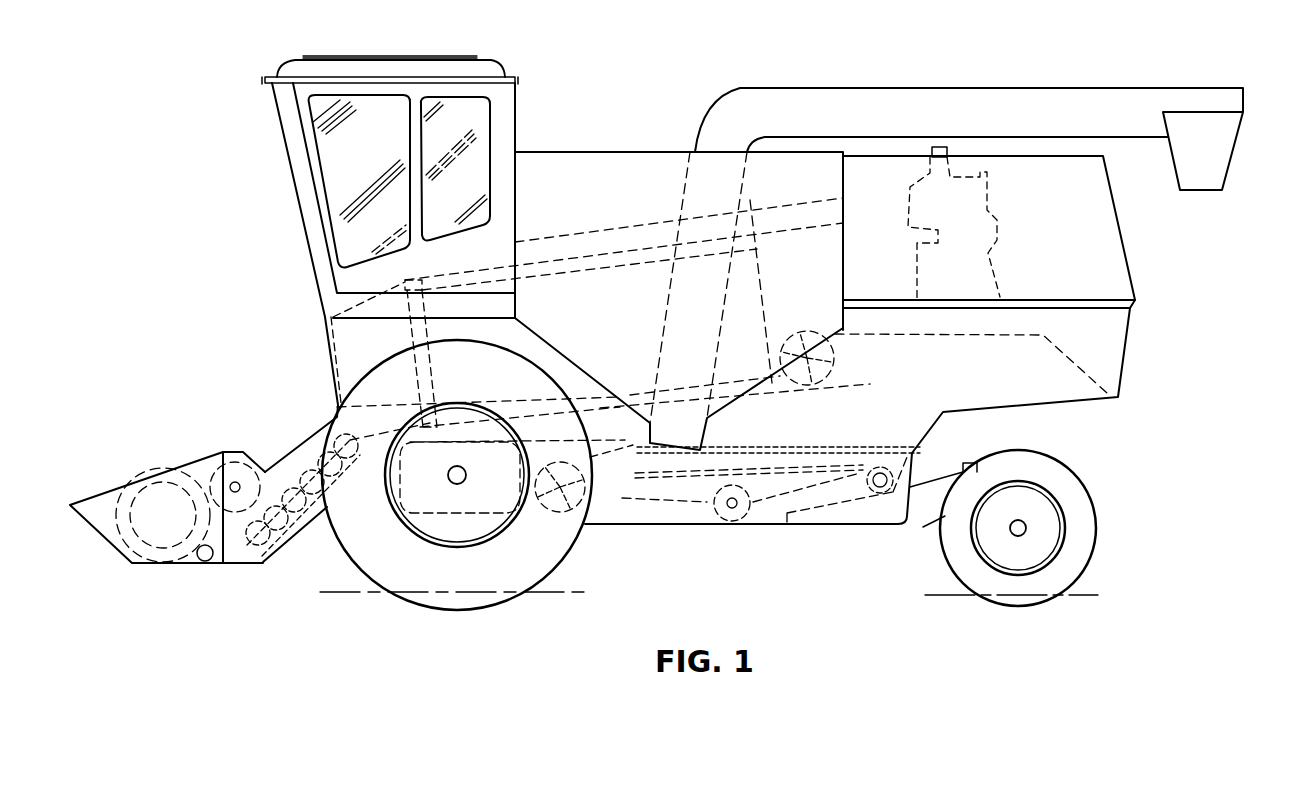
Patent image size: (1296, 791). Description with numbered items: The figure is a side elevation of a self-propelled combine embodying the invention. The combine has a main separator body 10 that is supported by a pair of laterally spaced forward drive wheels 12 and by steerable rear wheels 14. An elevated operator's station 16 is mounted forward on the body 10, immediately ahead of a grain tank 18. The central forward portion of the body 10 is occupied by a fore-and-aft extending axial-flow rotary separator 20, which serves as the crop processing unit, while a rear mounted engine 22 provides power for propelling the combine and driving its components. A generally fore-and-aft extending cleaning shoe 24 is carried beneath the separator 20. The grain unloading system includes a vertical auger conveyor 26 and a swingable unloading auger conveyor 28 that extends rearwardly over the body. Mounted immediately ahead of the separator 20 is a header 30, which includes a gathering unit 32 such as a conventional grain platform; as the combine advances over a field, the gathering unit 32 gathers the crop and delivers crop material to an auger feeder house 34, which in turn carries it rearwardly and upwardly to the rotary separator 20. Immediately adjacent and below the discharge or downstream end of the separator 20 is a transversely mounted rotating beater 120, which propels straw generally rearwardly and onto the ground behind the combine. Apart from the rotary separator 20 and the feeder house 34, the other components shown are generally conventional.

The main separator body 10 is at (627, 78).
The forward drive wheels 12 is at (572, 547).
The steerable rear wheels 14 is at (1098, 548).
The operator's station 16 is at (265, 123).
The grain tank 18 is at (575, 151).
The axial-flow rotary separator 20 is at (337, 355).
The engine 22 is at (985, 212).
The cleaning shoe 24 is at (740, 532).
The vertical auger conveyor 26 is at (688, 195).
The unloading auger conveyor 28 is at (930, 87).
The header 30 is at (190, 440).
The gathering unit 32 is at (107, 477).
The auger feeder house 34 is at (308, 440).
The rotating beater 120 is at (835, 358).